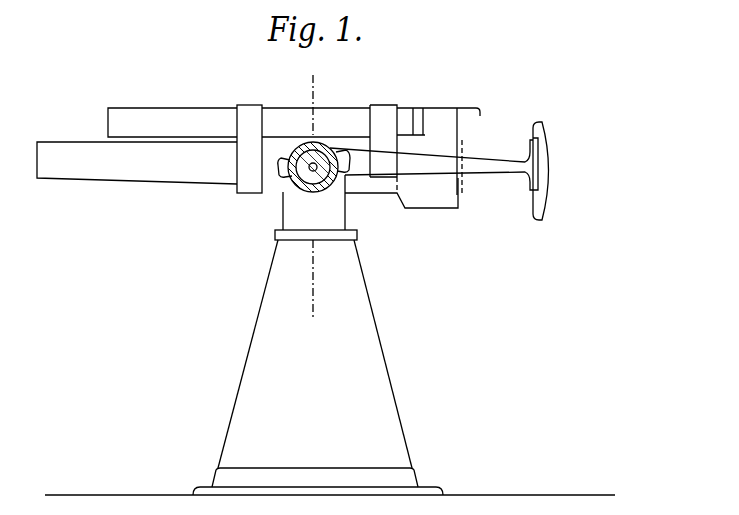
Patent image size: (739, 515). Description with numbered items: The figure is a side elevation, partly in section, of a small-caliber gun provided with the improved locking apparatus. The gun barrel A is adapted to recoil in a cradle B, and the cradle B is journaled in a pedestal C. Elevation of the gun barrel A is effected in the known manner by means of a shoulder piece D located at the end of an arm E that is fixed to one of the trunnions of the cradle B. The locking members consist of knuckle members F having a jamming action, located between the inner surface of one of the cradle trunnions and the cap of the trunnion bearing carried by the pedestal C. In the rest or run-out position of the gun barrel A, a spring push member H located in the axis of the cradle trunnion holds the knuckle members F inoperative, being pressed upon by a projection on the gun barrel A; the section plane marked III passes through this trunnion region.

The gun barrel A is at (168, 150).
The cradle B is at (288, 178).
The pedestal C is at (346, 218).
The shoulder piece D is at (548, 173).
The arm E is at (497, 178).
The knuckle members F is at (302, 150).
The spring push member H is at (289, 162).
The section line III is at (317, 74).